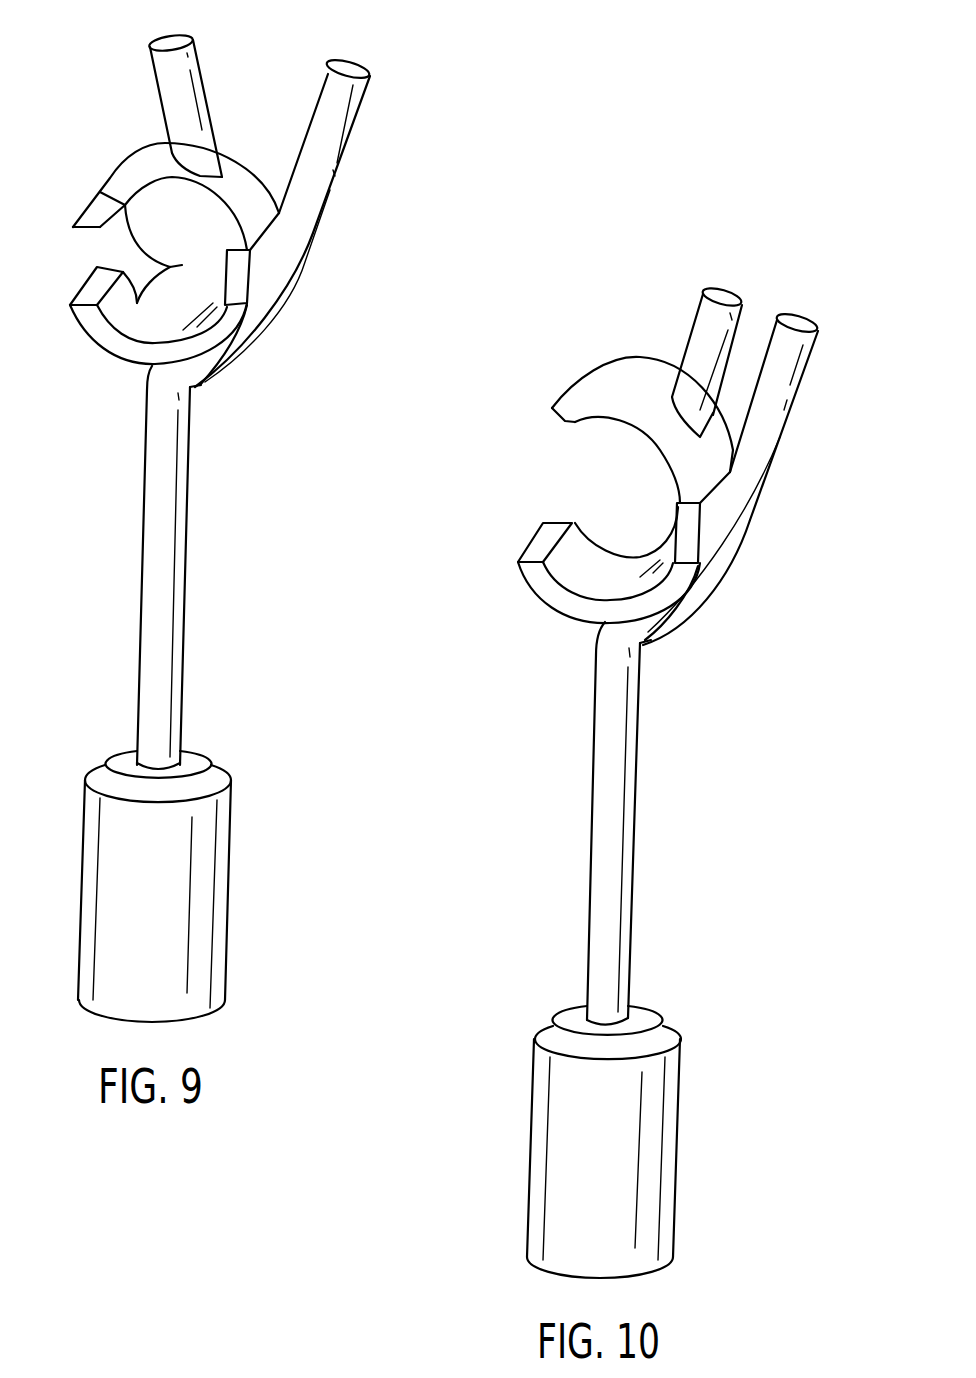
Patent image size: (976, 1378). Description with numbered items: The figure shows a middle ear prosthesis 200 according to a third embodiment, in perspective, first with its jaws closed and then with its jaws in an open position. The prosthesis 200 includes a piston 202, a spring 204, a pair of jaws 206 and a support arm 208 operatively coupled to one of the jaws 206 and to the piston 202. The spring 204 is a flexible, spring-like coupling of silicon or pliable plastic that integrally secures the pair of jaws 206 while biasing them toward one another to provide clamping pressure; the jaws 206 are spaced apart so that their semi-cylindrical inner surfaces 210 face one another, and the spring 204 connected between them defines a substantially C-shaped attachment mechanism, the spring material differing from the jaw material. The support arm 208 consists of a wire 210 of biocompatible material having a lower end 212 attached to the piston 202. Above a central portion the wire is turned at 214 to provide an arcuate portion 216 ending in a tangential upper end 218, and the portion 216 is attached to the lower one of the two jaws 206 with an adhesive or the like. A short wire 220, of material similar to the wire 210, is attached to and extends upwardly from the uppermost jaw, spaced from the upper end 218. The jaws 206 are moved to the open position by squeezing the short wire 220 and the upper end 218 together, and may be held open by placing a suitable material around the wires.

In FIG. 9, the middle ear prosthesis 200 is at (192, 527).
In FIG. 10, the middle ear prosthesis 200 is at (622, 768).
In FIG. 9, the piston 202 is at (230, 897).
In FIG. 10, the piston 202 is at (604, 1152).
In FIG. 9, the spring 204 is at (240, 277).
In FIG. 10, the spring 204 is at (685, 524).
In FIG. 9, the jaws 206 is at (73, 189).
In FIG. 10, the jaws 206 is at (545, 432).
In FIG. 9, the support arm 208 is at (190, 587).
In FIG. 10, the support arm 208 is at (613, 821).
In FIG. 9, the wire 210 is at (162, 530).
In FIG. 10, the wire 210 is at (626, 759).
In FIG. 9, the lower end 212 is at (200, 752).
In FIG. 10, the lower end 212 is at (607, 1020).
In FIG. 9, the central portion 214 is at (207, 390).
In FIG. 10, the central portion 214 is at (669, 604).
In FIG. 9, the arcuate portion 216 is at (217, 360).
In FIG. 10, the arcuate portion 216 is at (711, 541).
In FIG. 9, the tangential upper end 218 is at (327, 90).
In FIG. 10, the tangential upper end 218 is at (783, 347).
In FIG. 9, the short wire 220 is at (167, 70).
In FIG. 10, the short wire 220 is at (707, 330).